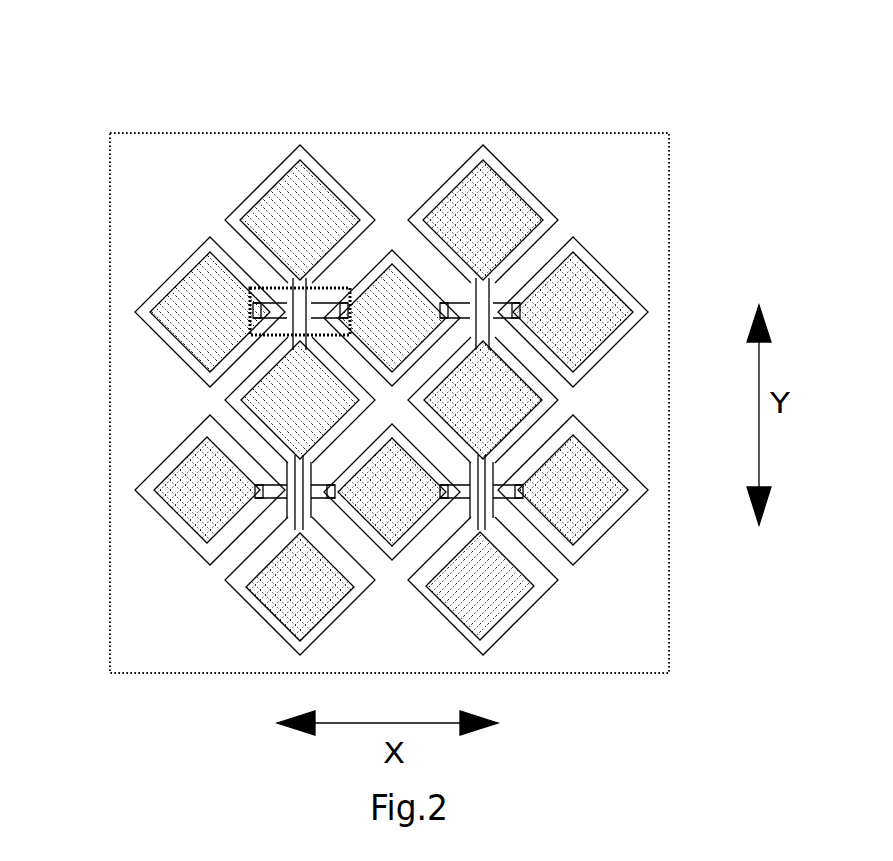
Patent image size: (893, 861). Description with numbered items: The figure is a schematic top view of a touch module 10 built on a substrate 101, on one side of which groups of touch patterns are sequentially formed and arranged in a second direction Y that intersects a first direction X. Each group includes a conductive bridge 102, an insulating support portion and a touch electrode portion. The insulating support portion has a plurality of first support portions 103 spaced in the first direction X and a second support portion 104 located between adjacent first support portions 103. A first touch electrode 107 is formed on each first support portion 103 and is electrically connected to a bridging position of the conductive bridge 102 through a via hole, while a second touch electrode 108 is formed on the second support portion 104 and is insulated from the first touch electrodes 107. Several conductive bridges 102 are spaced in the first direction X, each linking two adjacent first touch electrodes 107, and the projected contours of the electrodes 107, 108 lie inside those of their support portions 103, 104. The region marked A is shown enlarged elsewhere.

The touch module 10 is at (105, 34).
The substrate 101 is at (113, 224).
The conductive bridge 102 is at (207, 393).
The first support portion 103 is at (388, 245).
The second support portion 104 is at (337, 175).
The first touch electrode 107 is at (395, 250).
The second touch electrode 108 is at (297, 285).
The region A is at (252, 288).